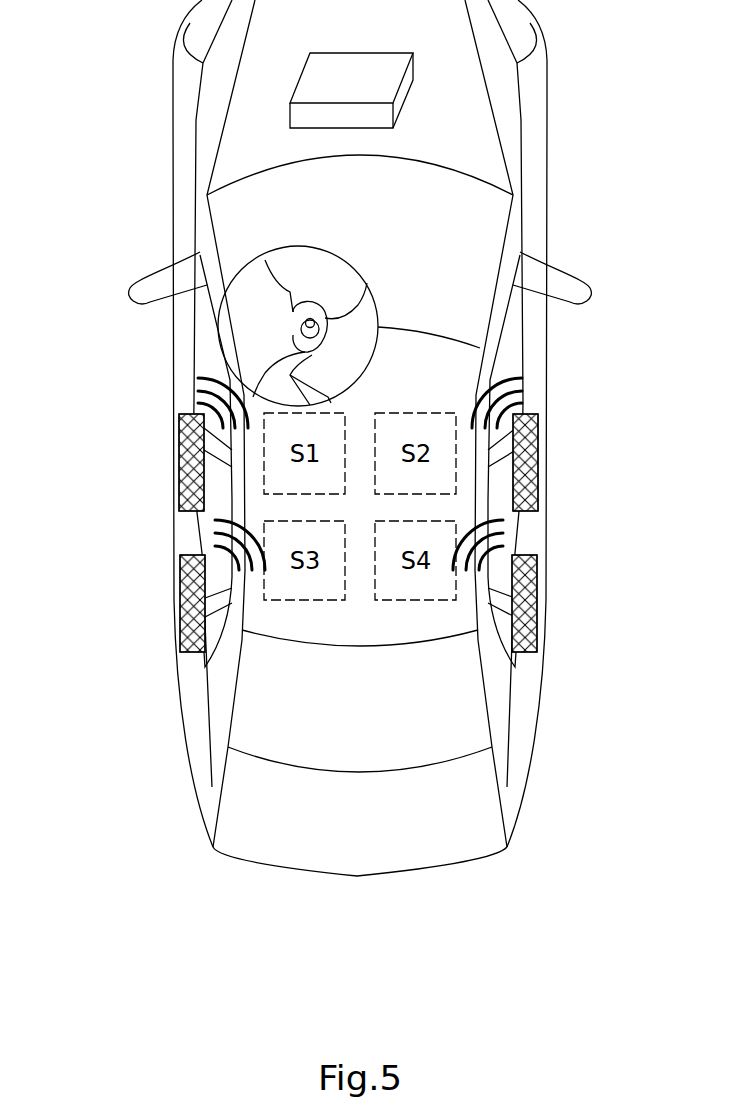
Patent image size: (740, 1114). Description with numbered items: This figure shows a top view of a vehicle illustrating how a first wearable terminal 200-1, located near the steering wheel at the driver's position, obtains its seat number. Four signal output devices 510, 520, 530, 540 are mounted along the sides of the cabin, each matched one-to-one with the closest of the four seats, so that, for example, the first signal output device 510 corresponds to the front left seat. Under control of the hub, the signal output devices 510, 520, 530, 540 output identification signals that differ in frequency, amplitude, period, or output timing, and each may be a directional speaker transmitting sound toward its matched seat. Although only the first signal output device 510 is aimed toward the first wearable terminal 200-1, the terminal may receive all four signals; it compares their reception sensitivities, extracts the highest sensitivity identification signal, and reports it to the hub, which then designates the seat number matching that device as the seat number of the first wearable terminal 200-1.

The first wearable terminal 200-1 is at (297, 333).
The first signal output device 510 is at (146, 453).
The second signal output device 520 is at (572, 453).
The third signal output device 530 is at (154, 610).
The fourth signal output device 540 is at (562, 610).